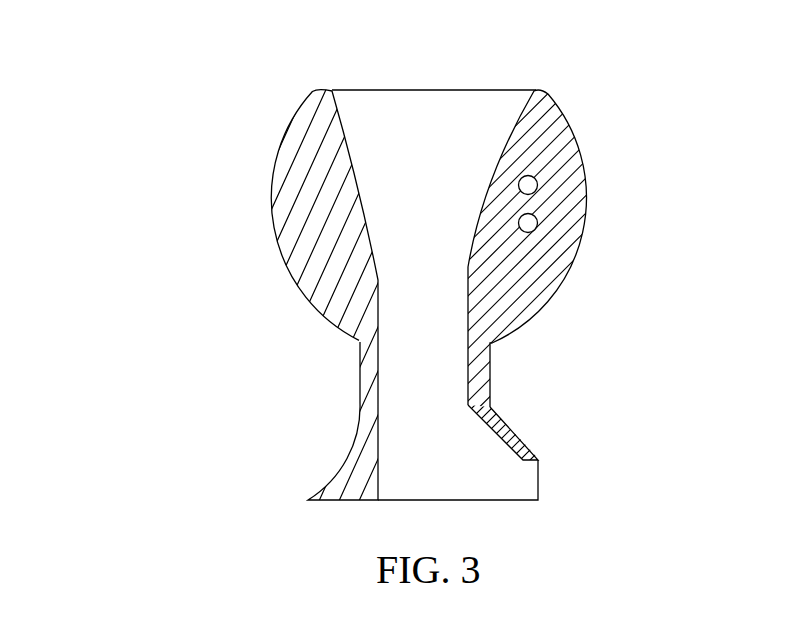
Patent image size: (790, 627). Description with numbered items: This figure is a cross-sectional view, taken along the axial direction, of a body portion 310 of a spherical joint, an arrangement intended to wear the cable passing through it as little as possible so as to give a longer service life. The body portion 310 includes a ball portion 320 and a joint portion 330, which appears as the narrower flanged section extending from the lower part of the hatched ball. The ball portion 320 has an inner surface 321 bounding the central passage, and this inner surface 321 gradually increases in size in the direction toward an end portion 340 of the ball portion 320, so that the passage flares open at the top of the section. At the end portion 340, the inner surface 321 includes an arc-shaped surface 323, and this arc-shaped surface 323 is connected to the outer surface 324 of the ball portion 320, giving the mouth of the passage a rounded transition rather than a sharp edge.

The body portion 310 is at (395, 313).
The ball portion 320 is at (314, 313).
The inner surface 321 is at (430, 145).
The arc-shaped surface 323 is at (338, 101).
The outer surface 324 is at (290, 122).
The joint portion 330 is at (507, 413).
The end portion 340 is at (548, 104).